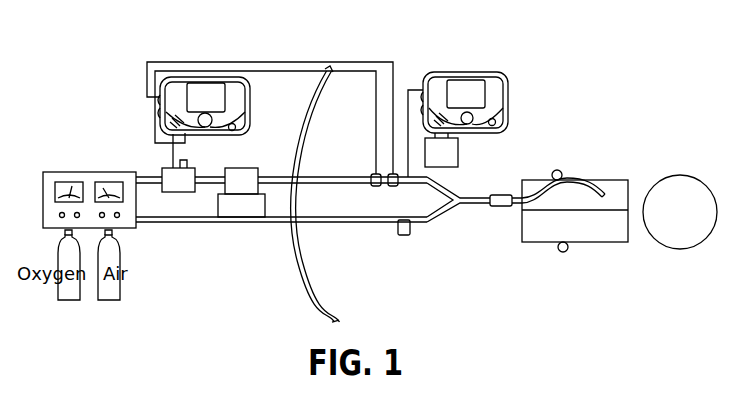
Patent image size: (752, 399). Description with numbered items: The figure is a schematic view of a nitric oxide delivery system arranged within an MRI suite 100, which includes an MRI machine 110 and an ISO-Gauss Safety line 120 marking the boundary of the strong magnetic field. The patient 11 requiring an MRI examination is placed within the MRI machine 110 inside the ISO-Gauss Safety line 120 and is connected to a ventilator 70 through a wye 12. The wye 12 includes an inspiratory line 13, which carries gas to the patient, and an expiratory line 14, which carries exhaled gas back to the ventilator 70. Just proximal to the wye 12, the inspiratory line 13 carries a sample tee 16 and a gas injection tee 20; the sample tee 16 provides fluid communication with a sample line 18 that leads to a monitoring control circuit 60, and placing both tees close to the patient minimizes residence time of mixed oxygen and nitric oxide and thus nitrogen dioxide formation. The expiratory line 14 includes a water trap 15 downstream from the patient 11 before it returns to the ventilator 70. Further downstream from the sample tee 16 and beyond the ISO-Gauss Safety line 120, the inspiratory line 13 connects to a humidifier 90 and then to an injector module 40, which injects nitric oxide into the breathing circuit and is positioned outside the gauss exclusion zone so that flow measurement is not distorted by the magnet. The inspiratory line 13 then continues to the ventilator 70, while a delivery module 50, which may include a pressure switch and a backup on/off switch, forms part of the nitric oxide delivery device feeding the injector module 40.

The MRI suite 100 is at (619, 94).
The ventilator 70 is at (60, 177).
The inspiratory line 13 is at (143, 176).
The expiratory line 14 is at (157, 223).
The injector module 40 is at (185, 183).
The delivery module 50 is at (202, 88).
The humidifier 90 is at (250, 173).
The ISO-Gauss Safety line 120 is at (303, 278).
The sample line 18 is at (397, 103).
The gas injection tee 20 is at (375, 185).
The sample tee 16 is at (396, 186).
The water trap 15 is at (402, 237).
The monitoring control circuit 60 is at (463, 72).
The wye 12 is at (600, 192).
The patient 11 is at (593, 233).
The MRI machine 110 is at (682, 185).